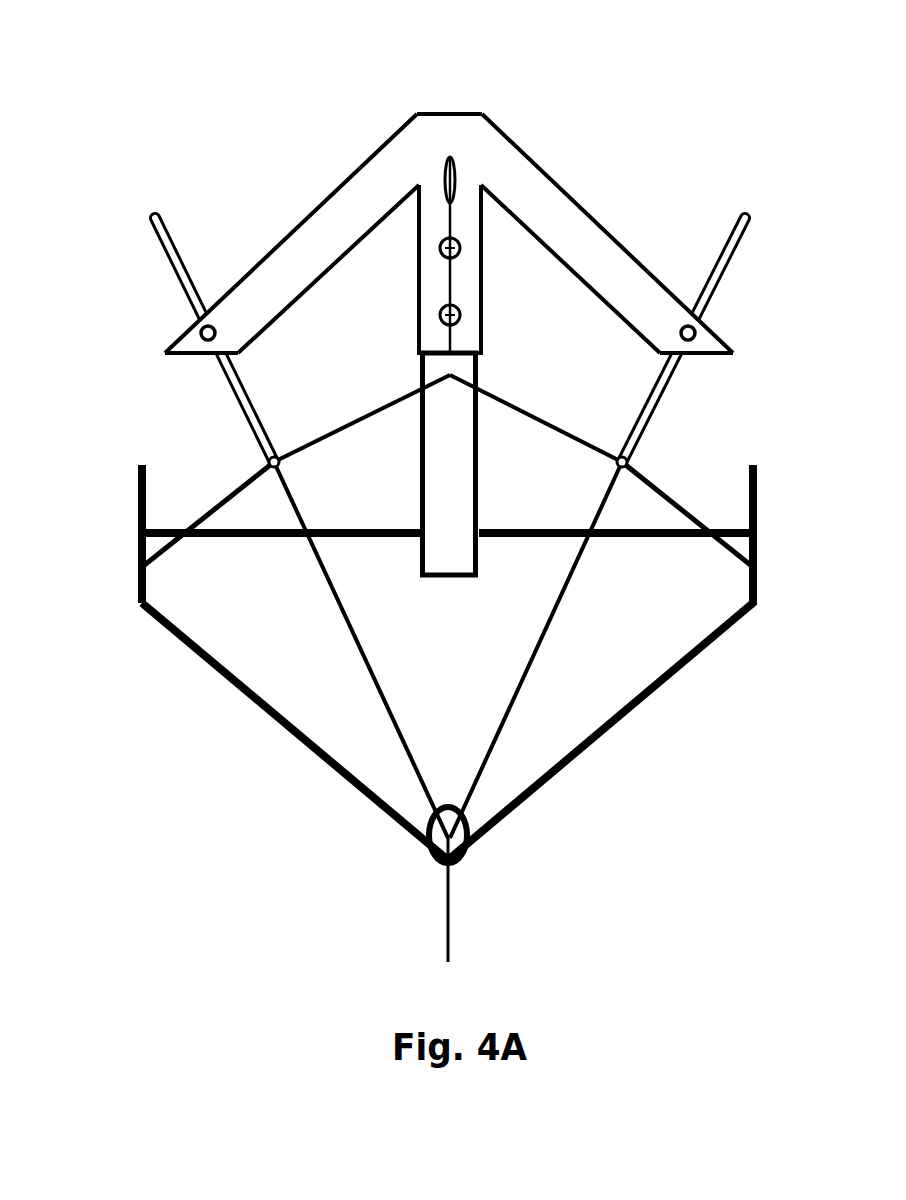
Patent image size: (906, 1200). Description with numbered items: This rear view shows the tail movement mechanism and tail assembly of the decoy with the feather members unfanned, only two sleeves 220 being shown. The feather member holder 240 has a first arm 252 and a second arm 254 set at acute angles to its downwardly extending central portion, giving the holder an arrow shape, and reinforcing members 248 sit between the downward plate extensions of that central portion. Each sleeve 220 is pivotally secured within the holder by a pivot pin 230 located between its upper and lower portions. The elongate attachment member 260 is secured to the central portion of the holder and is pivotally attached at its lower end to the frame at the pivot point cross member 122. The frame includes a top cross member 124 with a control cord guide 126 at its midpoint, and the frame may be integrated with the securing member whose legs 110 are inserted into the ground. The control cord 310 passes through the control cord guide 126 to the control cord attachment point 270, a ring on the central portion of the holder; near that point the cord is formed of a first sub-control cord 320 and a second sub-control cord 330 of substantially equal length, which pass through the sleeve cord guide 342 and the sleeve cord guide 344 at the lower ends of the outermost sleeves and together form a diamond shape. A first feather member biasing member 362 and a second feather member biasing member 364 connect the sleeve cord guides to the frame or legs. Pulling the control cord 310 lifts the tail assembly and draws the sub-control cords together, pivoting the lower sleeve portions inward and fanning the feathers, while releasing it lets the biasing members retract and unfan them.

The leg 110 is at (389, 662).
The pivot point cross member 122 is at (632, 530).
The top cross member 124 is at (298, 738).
The control cord guide 126 is at (470, 828).
The sleeve 220 is at (152, 220).
The pivot pin 230 is at (201, 333).
The feather member holder 240 is at (467, 178).
The reinforcing member 248 is at (462, 243).
The first arm 252 is at (310, 215).
The second arm 254 is at (592, 222).
The attachment member 260 is at (420, 494).
The control cord attachment point 270 is at (444, 168).
The control cord 310 is at (448, 282).
The first sub-control cord 320 is at (350, 420).
The second sub-control cord 330 is at (548, 421).
The sleeve cord guide 342 is at (267, 460).
The sleeve cord guide 344 is at (617, 465).
The first feather member biasing member 362 is at (208, 514).
The second feather member biasing member 364 is at (642, 478).